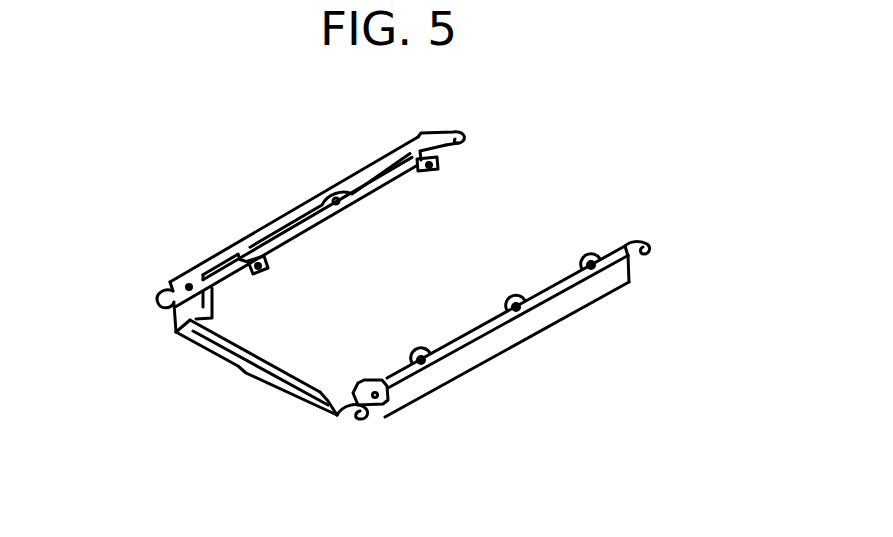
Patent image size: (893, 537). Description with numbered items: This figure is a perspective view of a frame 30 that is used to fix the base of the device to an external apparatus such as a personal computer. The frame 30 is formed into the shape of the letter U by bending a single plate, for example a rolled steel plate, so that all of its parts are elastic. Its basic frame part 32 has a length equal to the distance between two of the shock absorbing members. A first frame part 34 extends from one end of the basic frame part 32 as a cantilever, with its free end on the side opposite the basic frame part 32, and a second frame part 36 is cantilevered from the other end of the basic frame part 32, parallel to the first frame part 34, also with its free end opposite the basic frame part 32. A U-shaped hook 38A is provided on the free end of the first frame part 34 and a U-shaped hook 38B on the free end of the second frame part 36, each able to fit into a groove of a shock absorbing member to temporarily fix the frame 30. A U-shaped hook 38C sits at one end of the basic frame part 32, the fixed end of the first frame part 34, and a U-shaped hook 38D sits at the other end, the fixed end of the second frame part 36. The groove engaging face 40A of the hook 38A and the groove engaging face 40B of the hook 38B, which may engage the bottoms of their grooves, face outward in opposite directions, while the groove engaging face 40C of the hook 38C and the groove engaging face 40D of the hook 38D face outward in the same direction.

The frame 30 is at (555, 362).
The basic frame part 32 is at (226, 350).
The first frame part 34 is at (293, 212).
The second frame part 36 is at (470, 358).
The U-shaped hook 38A is at (466, 136).
The U-shaped hook 38B is at (633, 241).
The U-shaped hook 38C is at (166, 296).
The U-shaped hook 38D is at (372, 414).
The groove engaging face 40A is at (452, 133).
The groove engaging face 40B is at (648, 253).
The groove engaging face 40C is at (162, 307).
The groove engaging face 40D is at (362, 413).